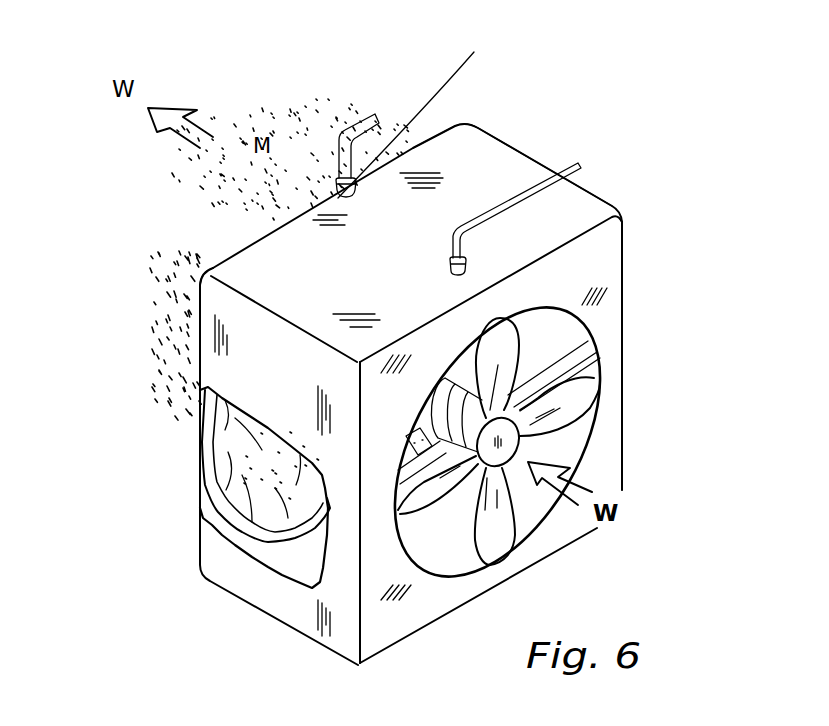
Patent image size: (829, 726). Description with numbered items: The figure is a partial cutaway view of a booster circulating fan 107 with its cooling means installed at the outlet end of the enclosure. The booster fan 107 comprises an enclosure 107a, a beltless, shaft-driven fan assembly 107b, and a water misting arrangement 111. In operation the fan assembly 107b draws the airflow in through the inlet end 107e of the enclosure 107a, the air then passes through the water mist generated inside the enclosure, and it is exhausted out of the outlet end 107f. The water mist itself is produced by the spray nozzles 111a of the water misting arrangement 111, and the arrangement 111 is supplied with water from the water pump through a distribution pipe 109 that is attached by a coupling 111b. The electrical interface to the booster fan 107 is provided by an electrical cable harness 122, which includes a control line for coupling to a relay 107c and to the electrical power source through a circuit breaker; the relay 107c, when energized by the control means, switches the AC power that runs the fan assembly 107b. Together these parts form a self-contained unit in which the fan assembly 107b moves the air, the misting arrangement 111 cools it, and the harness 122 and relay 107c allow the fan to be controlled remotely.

The booster fan 107 is at (392, 278).
The enclosure 107a is at (482, 145).
The fan assembly 107b is at (622, 362).
The relay 107c is at (620, 250).
The inlet end 107e is at (587, 452).
The outlet end 107f is at (213, 266).
The distribution pipe 109 is at (360, 112).
The water misting arrangement 111 is at (227, 523).
The spray nozzles 111a is at (220, 480).
The coupling 111b is at (429, 111).
The electrical cable harness 122 is at (578, 163).